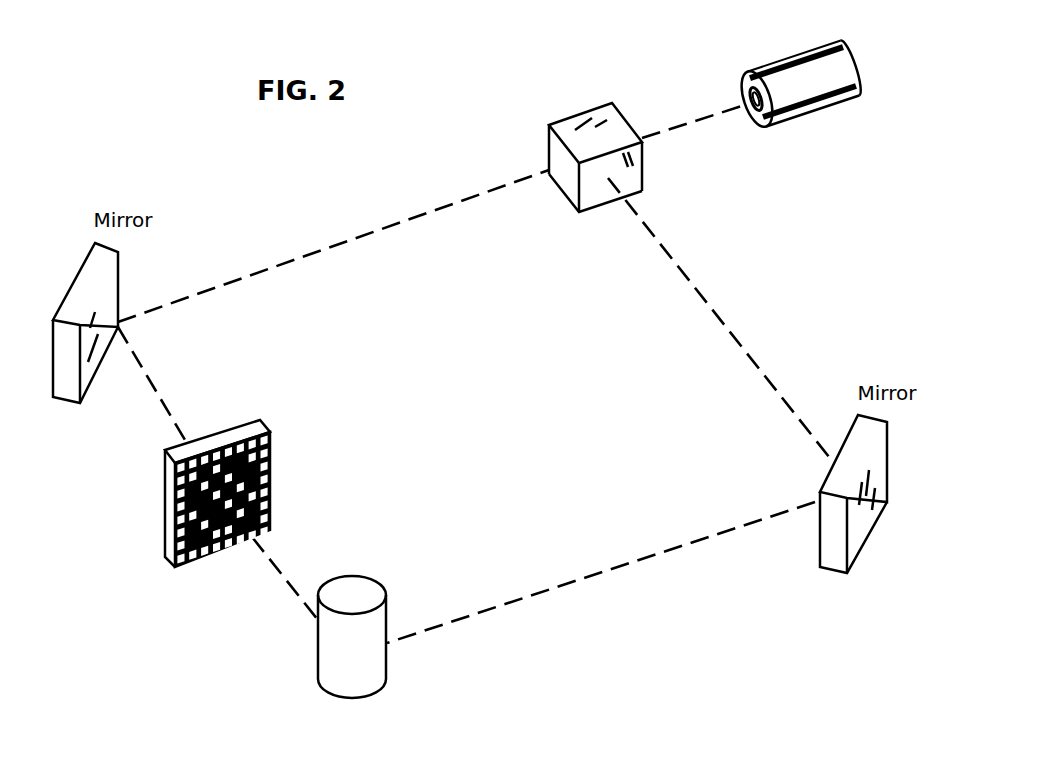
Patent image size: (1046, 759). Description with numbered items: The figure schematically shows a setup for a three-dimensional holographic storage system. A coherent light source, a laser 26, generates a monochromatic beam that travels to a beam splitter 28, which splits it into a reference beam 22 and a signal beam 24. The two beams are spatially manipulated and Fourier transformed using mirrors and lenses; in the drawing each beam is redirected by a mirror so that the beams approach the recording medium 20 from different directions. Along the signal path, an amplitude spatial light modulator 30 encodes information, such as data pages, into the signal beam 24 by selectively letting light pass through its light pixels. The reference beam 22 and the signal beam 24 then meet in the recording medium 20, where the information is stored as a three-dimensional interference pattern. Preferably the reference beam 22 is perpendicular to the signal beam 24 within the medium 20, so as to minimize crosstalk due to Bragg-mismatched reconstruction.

The recording medium 20 is at (374, 556).
The reference beam 22 is at (720, 323).
The signal beam 24 is at (365, 235).
The laser 26 is at (815, 107).
The beam splitter 28 is at (578, 108).
The amplitude spatial light modulator 30 is at (170, 562).